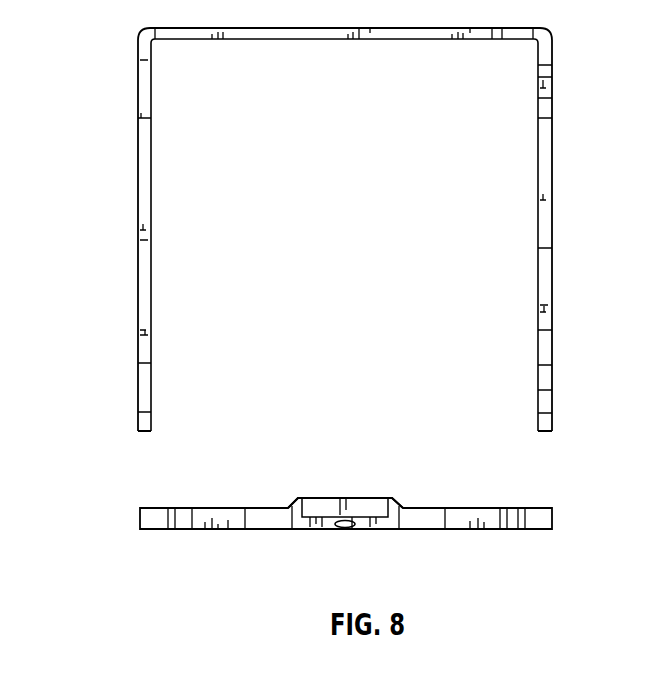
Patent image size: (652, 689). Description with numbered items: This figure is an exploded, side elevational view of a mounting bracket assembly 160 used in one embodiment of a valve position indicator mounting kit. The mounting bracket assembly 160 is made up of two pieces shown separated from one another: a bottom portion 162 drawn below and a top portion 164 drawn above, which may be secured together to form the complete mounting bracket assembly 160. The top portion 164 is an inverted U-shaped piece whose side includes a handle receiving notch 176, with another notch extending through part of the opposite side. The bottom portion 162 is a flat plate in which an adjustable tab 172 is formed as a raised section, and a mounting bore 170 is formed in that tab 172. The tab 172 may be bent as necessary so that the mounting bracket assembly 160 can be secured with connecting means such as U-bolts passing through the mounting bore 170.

The mounting bracket assembly 160 is at (116, 89).
The bottom portion 162 is at (178, 507).
The top portion 164 is at (552, 237).
The mounting bore 170 is at (349, 528).
The adjustable tab 172 is at (325, 497).
The handle receiving notch 176 is at (546, 272).